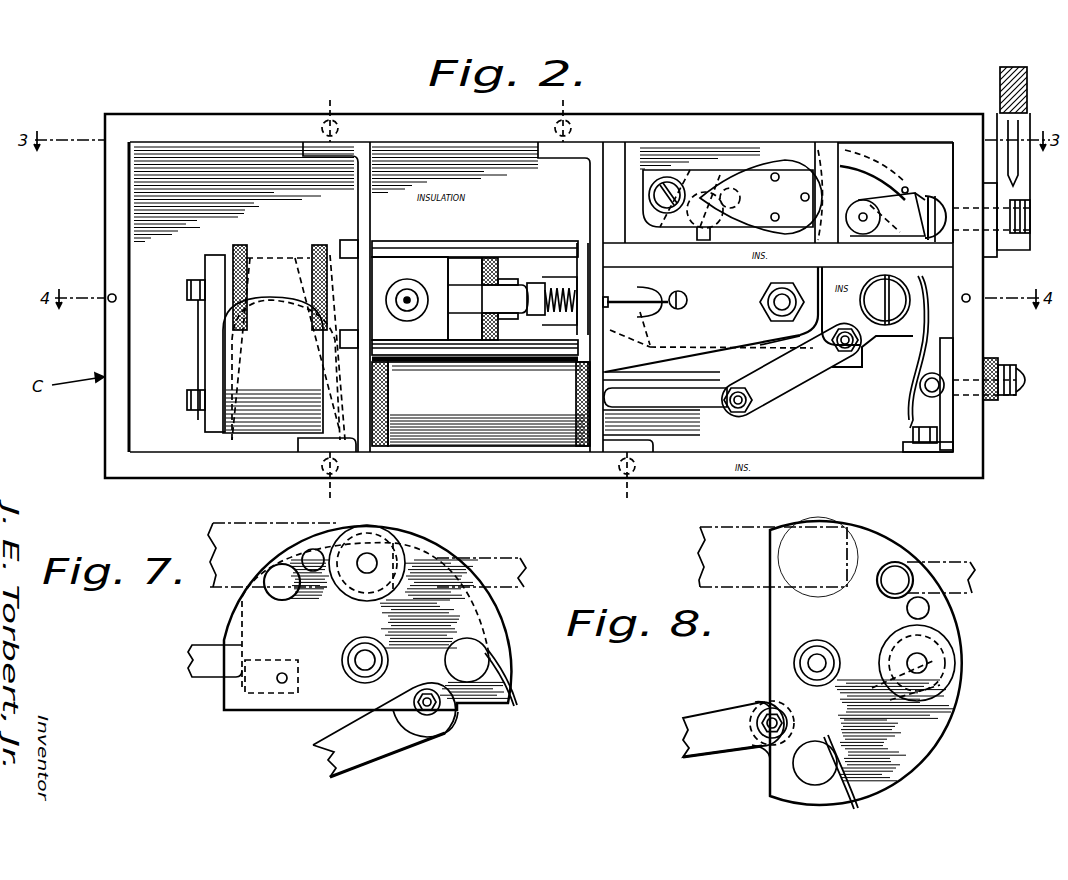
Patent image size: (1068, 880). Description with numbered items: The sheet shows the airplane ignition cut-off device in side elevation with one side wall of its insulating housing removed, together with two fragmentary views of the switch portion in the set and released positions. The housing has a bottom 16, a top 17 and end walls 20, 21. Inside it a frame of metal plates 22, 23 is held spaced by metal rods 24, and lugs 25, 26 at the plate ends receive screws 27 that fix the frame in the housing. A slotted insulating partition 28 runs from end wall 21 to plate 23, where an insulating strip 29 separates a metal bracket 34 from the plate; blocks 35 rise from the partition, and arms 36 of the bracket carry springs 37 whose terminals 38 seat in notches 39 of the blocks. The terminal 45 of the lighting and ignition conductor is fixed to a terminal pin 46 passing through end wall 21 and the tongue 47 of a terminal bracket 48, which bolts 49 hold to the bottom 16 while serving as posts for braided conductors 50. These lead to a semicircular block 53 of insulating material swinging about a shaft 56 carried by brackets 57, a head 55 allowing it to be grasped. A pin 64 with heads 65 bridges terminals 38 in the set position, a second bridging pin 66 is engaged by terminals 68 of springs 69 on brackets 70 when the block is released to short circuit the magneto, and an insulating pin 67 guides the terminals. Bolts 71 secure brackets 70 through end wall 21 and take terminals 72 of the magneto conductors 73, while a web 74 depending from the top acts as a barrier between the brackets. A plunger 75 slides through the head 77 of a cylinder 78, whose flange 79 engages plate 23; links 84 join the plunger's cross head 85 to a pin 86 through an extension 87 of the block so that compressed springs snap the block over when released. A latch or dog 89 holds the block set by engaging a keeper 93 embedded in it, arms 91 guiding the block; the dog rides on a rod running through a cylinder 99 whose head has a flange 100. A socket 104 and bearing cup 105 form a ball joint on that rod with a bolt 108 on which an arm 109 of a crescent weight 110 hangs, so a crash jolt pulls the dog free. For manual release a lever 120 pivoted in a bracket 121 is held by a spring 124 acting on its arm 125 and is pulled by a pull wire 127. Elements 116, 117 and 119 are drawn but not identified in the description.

In FIG. 2, the bottom 16 is at (470, 470).
In FIG. 2, the top 17 is at (655, 119).
In FIG. 2, the end wall 20 is at (108, 231).
In FIG. 2, the end wall 21 is at (970, 283).
In FIG. 2, the metal plate 22 is at (355, 205).
In FIG. 2, the metal plate 23 is at (592, 195).
In FIG. 2, the metal rods 24 is at (500, 252).
In FIG. 2, the lugs 25 is at (325, 158).
In FIG. 2, the lugs 26 is at (556, 157).
In FIG. 2, the screws 27 is at (340, 130).
In FIG. 2, the partition 28 is at (750, 268).
In FIG. 2, the strip of insulating material 29 is at (615, 150).
In FIG. 2, the metal bracket 34 is at (660, 166).
In FIG. 2, the blocks 35 is at (828, 160).
In FIG. 2, the arms 36 is at (705, 182).
In FIG. 2, the springs 37 is at (702, 196).
In FIG. 7, the springs 37 is at (247, 530).
In FIG. 8, the springs 37 is at (735, 540).
In FIG. 2, the terminals 38 is at (790, 162).
In FIG. 2, the notches 39 is at (865, 177).
In FIG. 2, the terminal 45 is at (1018, 374).
In FIG. 2, the terminal pin 46 is at (930, 392).
In FIG. 2, the upstanding tongue 47 is at (948, 346).
In FIG. 2, the terminal bracket 48 is at (935, 455).
In FIG. 2, the bolts 49 is at (912, 437).
In FIG. 2, the conductors 50 is at (920, 352).
In FIG. 7, the conductors 50 is at (510, 690).
In FIG. 8, the conductors 50 is at (862, 802).
In FIG. 2, the block of insulating material 53 is at (742, 352).
In FIG. 7, the block of insulating material 53 is at (323, 690).
In FIG. 8, the block of insulating material 53 is at (768, 635).
In FIG. 2, the head 55 is at (870, 302).
In FIG. 2, the shaft 56 is at (762, 311).
In FIG. 2, the brackets 57 is at (700, 336).
In FIG. 7, the pin 64 is at (366, 570).
In FIG. 8, the pin 64 is at (912, 659).
In FIG. 7, the heads 65 is at (398, 553).
In FIG. 8, the heads 65 is at (950, 656).
In FIG. 2, the second bridging pin 66 is at (692, 230).
In FIG. 7, the second bridging pin 66 is at (278, 576).
In FIG. 8, the second bridging pin 66 is at (900, 575).
In FIG. 7, the pin 67 is at (311, 549).
In FIG. 8, the pin 67 is at (930, 608).
In FIG. 2, the terminals 68 is at (878, 206).
In FIG. 2, the springs 69 is at (918, 190).
In FIG. 2, the metal brackets 70 is at (930, 200).
In FIG. 2, the bolts 71 is at (1027, 214).
In FIG. 2, the terminals 72 is at (1020, 170).
In FIG. 2, the conductors 73 is at (1026, 96).
In FIG. 2, the web 74 is at (905, 160).
In FIG. 2, the plunger 75 is at (700, 408).
In FIG. 2, the head 77 is at (585, 445).
In FIG. 2, the cylinder 78 is at (536, 432).
In FIG. 2, the flange 79 is at (690, 412).
In FIG. 2, the links 84 is at (790, 396).
In FIG. 7, the links 84 is at (350, 752).
In FIG. 8, the links 84 is at (700, 718).
In FIG. 2, the cross head 85 is at (746, 413).
In FIG. 2, the pin 86 is at (844, 352).
In FIG. 7, the pin 86 is at (428, 716).
In FIG. 8, the pin 86 is at (768, 735).
In FIG. 2, the extension 87 is at (876, 366).
In FIG. 7, the extension 87 is at (458, 720).
In FIG. 8, the extension 87 is at (756, 702).
In FIG. 7, the latch 89 is at (205, 670).
In FIG. 2, the arms 91 is at (650, 290).
In FIG. 7, the keeper 93 is at (262, 695).
In FIG. 2, the cylinder 99 is at (458, 255).
In FIG. 2, the flange 100 is at (375, 292).
In FIG. 2, the socket 104 is at (318, 258).
In FIG. 2, the bearing cup 105 is at (245, 258).
In FIG. 2, the bolt 108 is at (188, 290).
In FIG. 2, the arm 109 is at (208, 272).
In FIG. 2, the weight 110 is at (285, 308).
In FIG. 2, the rod 116 is at (615, 298).
In FIG. 2, the link 117 is at (646, 302).
In FIG. 2, the roller 119 is at (688, 298).
In FIG. 2, the lever 120 is at (496, 299).
In FIG. 2, the bracket 121 is at (585, 345).
In FIG. 2, the spring 124 is at (560, 312).
In FIG. 2, the arm 125 is at (540, 300).
In FIG. 2, the pull wire 127 is at (405, 306).